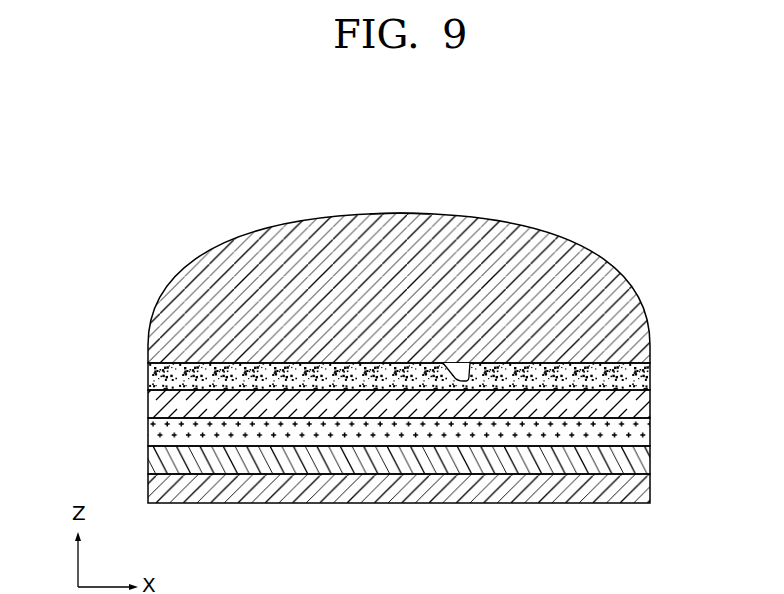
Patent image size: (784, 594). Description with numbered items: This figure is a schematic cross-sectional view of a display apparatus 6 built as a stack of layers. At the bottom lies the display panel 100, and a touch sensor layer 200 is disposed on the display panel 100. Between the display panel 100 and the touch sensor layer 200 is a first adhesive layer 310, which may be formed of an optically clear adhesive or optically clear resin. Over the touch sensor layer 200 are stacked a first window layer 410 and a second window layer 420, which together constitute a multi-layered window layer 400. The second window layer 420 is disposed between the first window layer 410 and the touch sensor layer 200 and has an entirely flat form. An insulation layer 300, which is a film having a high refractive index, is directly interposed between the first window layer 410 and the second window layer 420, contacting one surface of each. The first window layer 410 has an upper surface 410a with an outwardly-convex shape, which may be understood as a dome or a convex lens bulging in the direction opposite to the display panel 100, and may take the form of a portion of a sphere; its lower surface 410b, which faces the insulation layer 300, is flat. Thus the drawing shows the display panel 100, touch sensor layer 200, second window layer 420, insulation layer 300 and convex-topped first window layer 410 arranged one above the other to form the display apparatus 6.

The display apparatus 6 is at (654, 226).
The display panel 100 is at (640, 491).
The touch sensor layer 200 is at (640, 462).
The insulation layer 300 is at (637, 378).
The first adhesive layer 310 is at (640, 434).
The window layer 400 is at (81, 336).
The first window layer 410 is at (150, 352).
The upper surface of the first window layer 410a is at (393, 213).
The lower surface of the first window layer 410b is at (470, 363).
The second window layer 420 is at (150, 407).